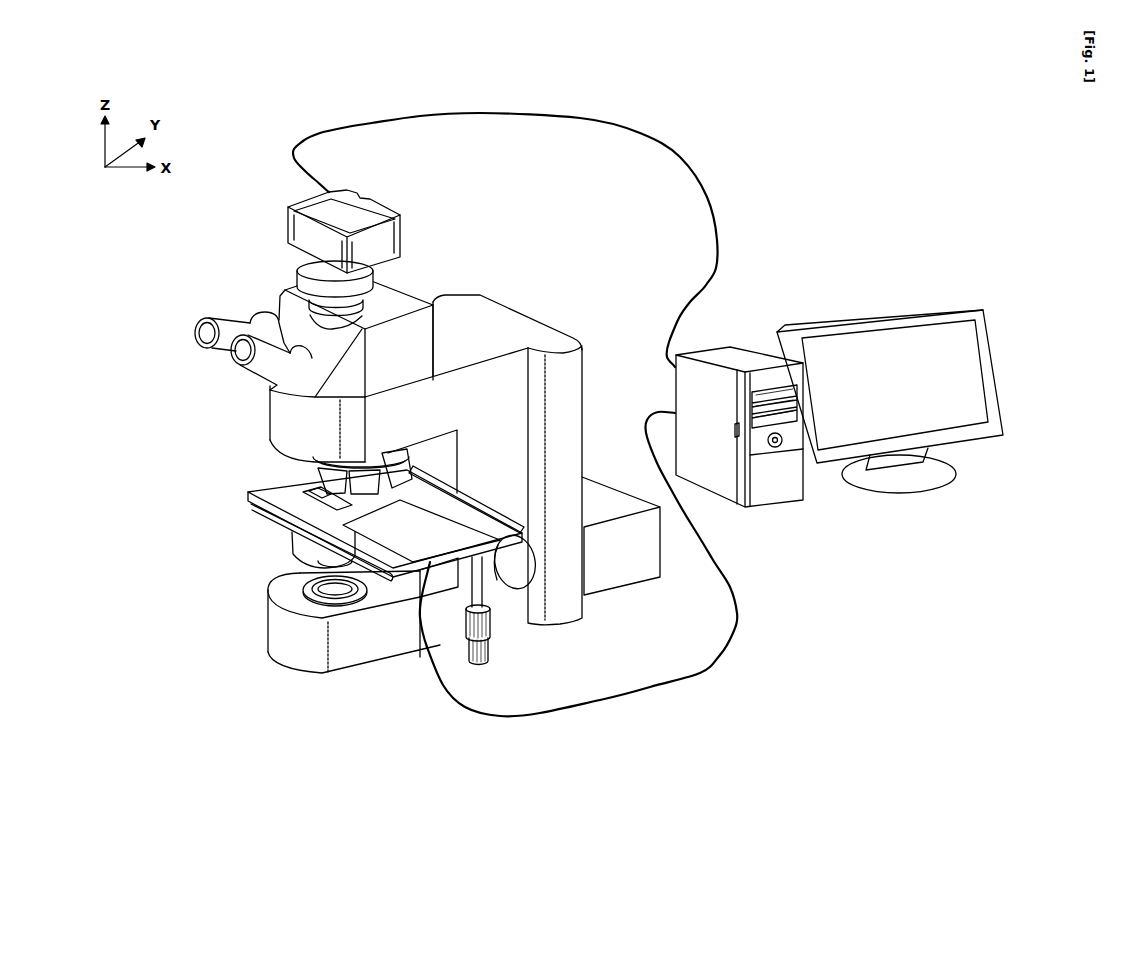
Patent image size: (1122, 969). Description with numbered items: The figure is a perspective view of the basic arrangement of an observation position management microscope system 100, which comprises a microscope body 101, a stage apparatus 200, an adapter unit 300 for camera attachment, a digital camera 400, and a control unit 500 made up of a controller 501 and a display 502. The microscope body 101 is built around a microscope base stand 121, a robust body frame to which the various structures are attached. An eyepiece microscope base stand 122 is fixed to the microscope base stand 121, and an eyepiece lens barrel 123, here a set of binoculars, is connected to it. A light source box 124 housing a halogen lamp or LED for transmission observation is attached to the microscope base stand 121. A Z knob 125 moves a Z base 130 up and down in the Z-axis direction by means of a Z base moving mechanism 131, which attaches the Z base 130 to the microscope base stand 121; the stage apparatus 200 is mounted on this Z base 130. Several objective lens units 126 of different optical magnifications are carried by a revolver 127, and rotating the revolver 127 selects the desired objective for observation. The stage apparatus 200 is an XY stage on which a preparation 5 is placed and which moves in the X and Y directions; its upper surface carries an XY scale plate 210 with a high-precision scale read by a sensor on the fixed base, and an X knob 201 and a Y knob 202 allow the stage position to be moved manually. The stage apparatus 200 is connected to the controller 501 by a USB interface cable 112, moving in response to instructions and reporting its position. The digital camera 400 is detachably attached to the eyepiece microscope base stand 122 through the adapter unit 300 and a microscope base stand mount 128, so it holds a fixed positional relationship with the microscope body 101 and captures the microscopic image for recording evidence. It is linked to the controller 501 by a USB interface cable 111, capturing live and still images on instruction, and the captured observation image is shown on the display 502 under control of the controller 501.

The microscope system 100 is at (216, 126).
The microscope body 101 is at (186, 420).
The USB interface cable 111 is at (590, 117).
The USB interface cable 112 is at (637, 695).
The digital camera 400 is at (340, 191).
The adapter unit 300 is at (296, 268).
The microscope base stand mount 128 is at (373, 318).
The eyepiece microscope base stand 122 is at (413, 292).
The eyepiece lens barrel 123 is at (254, 318).
The microscope base stand 121 is at (518, 320).
The light source box 124 is at (638, 586).
The revolver 127 is at (290, 457).
The objective lens unit 126 is at (413, 447).
The stage apparatus 200 is at (246, 492).
The XY scale plate 210 is at (473, 509).
The Z base moving mechanism 131 is at (427, 470).
The preparation 5 is at (313, 506).
The Z base 130 is at (297, 545).
The Z knob 125 is at (510, 587).
The Y knob 202 is at (467, 625).
The X knob 201 is at (480, 663).
The control unit 500 is at (862, 286).
The controller 501 is at (753, 350).
The display 502 is at (835, 328).